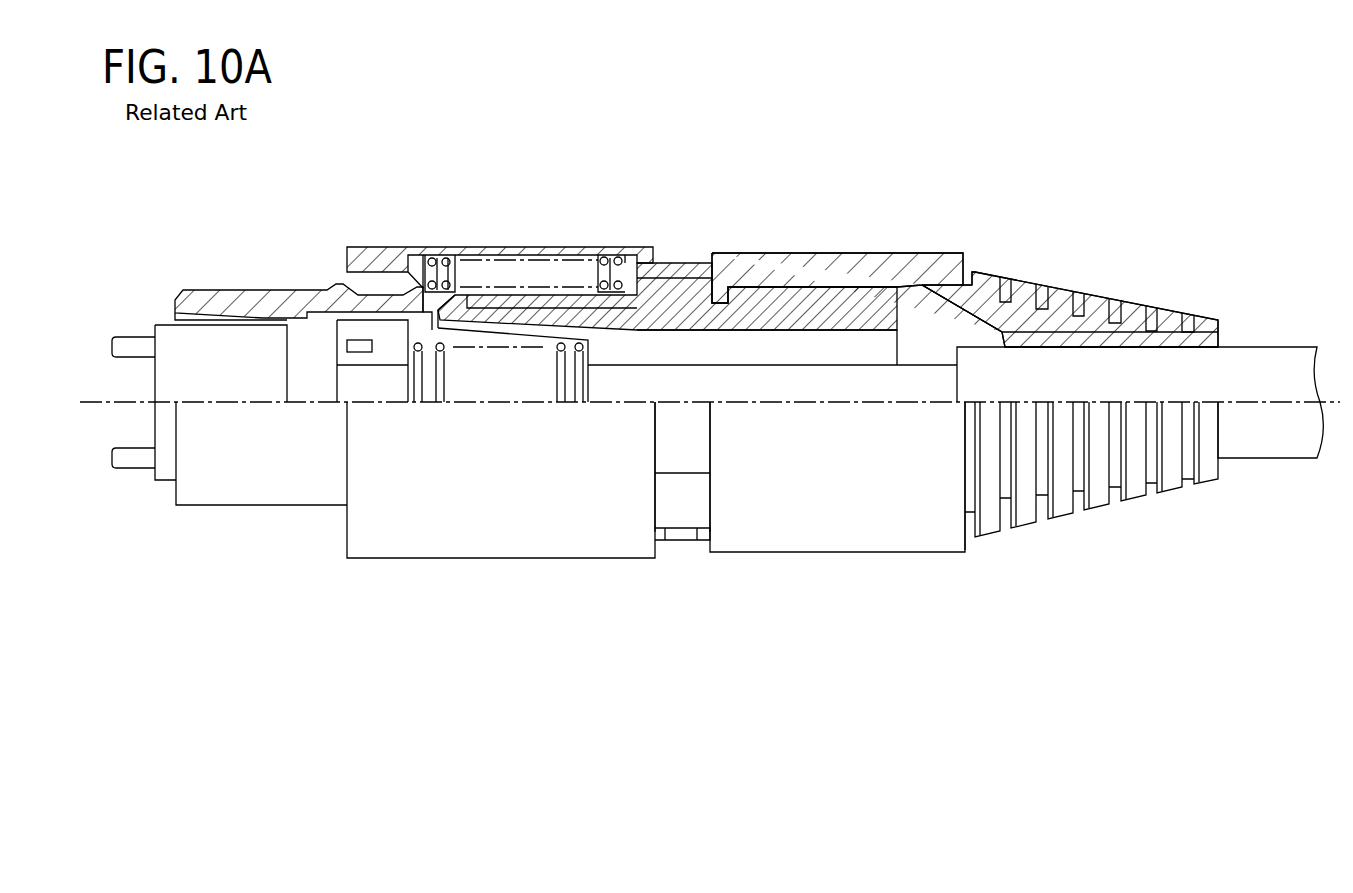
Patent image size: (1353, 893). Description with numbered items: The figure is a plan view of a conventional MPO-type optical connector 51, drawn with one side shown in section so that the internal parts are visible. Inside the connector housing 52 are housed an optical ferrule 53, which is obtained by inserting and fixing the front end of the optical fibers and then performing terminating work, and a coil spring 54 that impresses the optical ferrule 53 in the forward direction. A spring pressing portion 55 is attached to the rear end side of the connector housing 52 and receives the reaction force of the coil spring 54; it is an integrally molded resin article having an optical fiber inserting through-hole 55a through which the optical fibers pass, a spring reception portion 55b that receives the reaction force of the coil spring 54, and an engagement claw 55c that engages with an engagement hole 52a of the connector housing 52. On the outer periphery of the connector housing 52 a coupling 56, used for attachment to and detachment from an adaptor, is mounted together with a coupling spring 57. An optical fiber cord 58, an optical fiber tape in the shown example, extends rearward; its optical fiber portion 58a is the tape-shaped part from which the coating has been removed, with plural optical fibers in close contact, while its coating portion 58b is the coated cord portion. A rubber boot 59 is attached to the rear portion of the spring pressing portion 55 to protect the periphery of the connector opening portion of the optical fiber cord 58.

The optical connector 51 is at (602, 127).
The connector housing 52 is at (225, 305).
The engagement hole 52a is at (430, 316).
The optical ferrule 53 is at (165, 470).
The coil spring 54 is at (440, 373).
The spring pressing portion 55 is at (690, 305).
The optical fiber inserting through-hole 55a is at (800, 333).
The spring reception portion 55b is at (560, 373).
The engagement claw 55c is at (455, 297).
The coupling 56 is at (522, 247).
The coupling spring 57 is at (440, 250).
The optical fiber cord 58 is at (1248, 365).
The optical fiber portion 58a is at (838, 357).
The coating portion 58b is at (1092, 380).
The rubber boot 59 is at (858, 253).